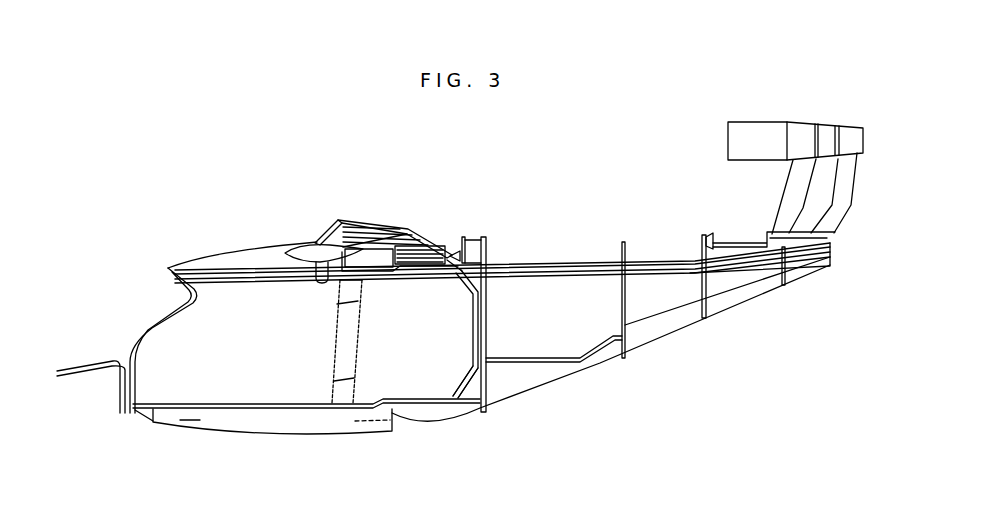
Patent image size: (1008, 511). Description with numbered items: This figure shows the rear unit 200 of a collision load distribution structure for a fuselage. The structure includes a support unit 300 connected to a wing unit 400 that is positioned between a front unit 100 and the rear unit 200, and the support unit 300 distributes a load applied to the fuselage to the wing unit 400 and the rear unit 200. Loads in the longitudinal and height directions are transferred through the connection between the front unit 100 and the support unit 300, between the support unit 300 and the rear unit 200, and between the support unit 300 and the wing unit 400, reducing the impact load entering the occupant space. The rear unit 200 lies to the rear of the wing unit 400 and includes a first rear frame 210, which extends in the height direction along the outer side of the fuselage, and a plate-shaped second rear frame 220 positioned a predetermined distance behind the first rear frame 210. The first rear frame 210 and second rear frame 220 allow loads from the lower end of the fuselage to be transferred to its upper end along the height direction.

The front unit 100 is at (150, 327).
The rear unit 200 is at (492, 253).
The first rear frame 210 is at (472, 388).
The second rear frame 220 is at (487, 387).
The support unit 300 is at (410, 265).
The wing unit 400 is at (350, 222).